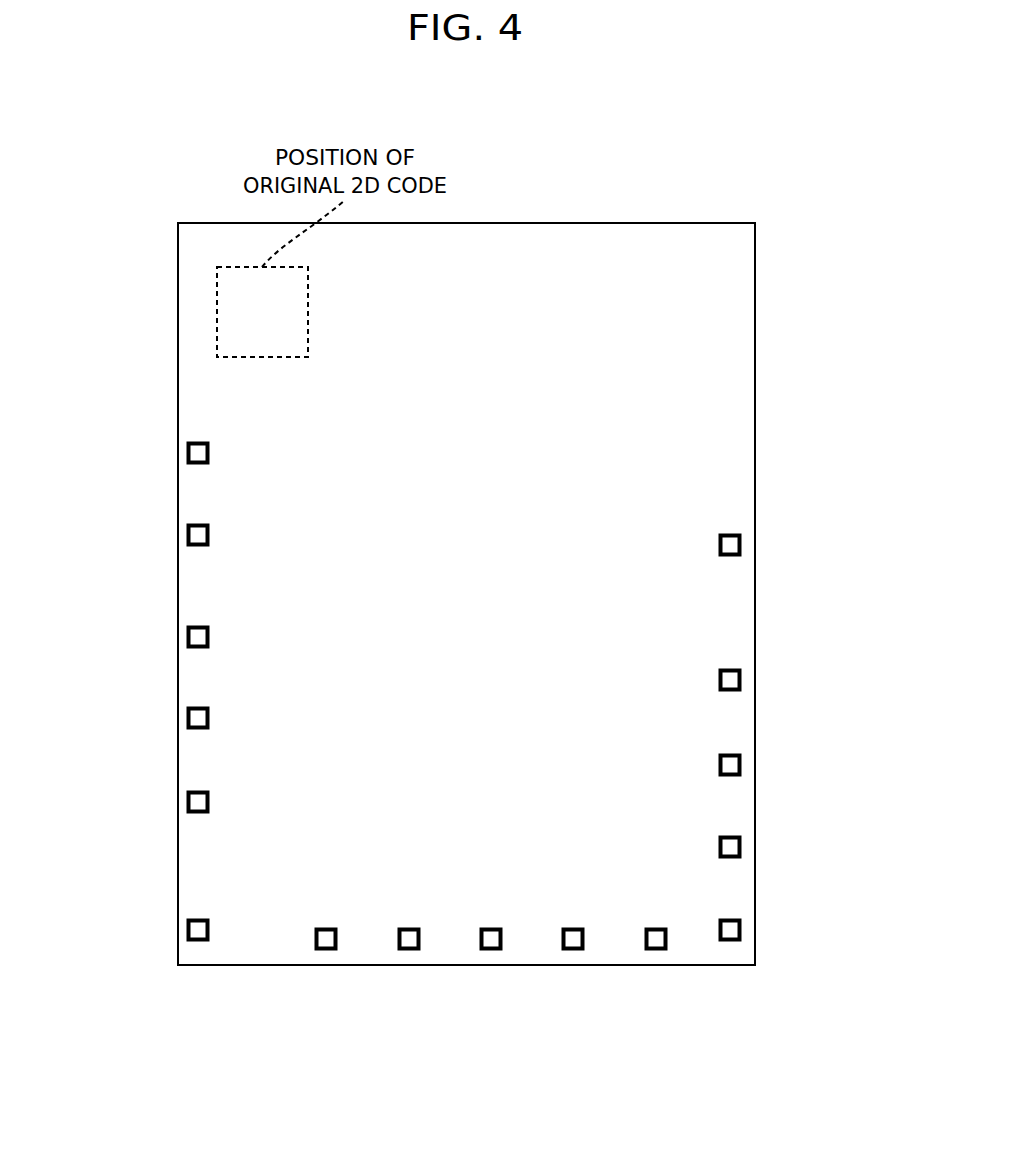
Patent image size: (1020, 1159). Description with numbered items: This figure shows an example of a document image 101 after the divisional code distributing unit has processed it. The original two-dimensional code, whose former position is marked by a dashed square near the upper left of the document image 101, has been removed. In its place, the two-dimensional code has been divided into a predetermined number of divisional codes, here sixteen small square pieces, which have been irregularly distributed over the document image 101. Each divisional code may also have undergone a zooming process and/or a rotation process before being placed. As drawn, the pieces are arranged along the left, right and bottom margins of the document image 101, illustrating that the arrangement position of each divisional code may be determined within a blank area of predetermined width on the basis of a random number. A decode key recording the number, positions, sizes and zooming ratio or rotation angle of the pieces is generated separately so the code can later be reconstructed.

The document image 101 is at (728, 223).